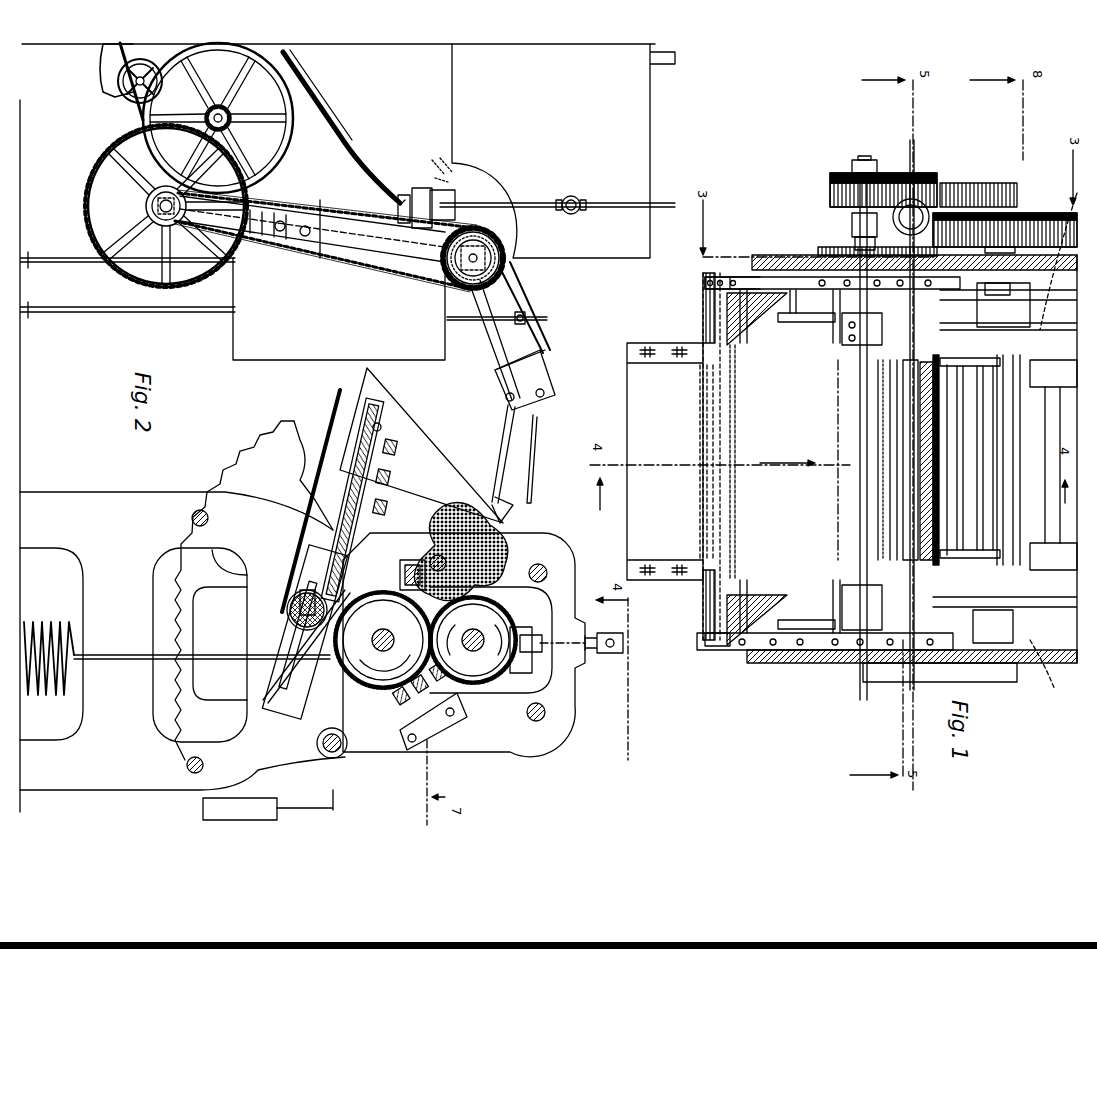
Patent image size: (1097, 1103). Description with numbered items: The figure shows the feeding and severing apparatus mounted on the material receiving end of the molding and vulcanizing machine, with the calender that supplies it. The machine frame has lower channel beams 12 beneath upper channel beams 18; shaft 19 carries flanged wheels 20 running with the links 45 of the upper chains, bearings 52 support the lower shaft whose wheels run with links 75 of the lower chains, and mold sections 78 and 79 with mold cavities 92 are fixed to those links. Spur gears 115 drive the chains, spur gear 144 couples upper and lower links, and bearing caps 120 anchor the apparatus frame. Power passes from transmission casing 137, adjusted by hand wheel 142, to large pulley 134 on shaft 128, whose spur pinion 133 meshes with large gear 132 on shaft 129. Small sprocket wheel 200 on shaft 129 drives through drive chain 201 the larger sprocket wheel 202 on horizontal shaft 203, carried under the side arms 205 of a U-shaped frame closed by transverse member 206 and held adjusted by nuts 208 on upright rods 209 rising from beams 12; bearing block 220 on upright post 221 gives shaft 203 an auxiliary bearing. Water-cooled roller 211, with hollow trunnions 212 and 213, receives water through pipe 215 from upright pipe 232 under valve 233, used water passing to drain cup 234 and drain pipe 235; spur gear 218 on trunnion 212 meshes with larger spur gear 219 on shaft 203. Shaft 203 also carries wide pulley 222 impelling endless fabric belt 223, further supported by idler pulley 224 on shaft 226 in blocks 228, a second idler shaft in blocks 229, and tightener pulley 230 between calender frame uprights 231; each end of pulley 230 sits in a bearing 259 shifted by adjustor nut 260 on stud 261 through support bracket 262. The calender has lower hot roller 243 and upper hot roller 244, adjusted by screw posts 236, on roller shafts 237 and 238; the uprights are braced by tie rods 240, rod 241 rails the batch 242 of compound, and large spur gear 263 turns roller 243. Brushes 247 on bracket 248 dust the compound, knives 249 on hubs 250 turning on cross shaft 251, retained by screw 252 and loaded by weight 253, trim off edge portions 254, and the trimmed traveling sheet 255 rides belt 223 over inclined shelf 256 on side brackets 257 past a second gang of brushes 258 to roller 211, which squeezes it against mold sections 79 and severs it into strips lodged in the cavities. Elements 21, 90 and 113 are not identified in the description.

In FIG. 1, the lower channel beams 12 is at (750, 300).
In FIG. 1, the upper channel beams 18 is at (1047, 465).
In FIG. 1, the shaft 19 is at (1022, 460).
In FIG. 1, the flanged wheels 20 is at (1027, 412).
In FIG. 1, the block 21 is at (1000, 325).
In FIG. 1, the links 45 is at (970, 458).
In FIG. 1, the bearings 52 is at (802, 312).
In FIG. 1, the links 75 is at (987, 458).
In FIG. 1, the mold section 78 is at (960, 458).
In FIG. 1, the mold section 79 is at (800, 347).
In FIG. 1, the bar 90 is at (947, 460).
In FIG. 1, the mold cavities 92 is at (947, 515).
In FIG. 2, the frame member 113 is at (678, 62).
In FIG. 1, the spur gears 115 is at (903, 400).
In FIG. 1, the bearing caps 120 is at (977, 310).
In FIG. 2, the shaft 128 is at (285, 110).
In FIG. 2, the horizontal shaft 129 is at (125, 178).
In FIG. 2, the large gear 132 is at (78, 205).
In FIG. 1, the large gear 132 is at (833, 180).
In FIG. 2, the spur pinion 133 is at (288, 140).
In FIG. 1, the spur pinion 133 is at (1000, 185).
In FIG. 2, the large pulley 134 is at (323, 112).
In FIG. 1, the large pulley 134 is at (1043, 215).
In FIG. 2, the casing 137 is at (120, 92).
In FIG. 2, the hand wheel 142 is at (103, 72).
In FIG. 1, the spur gear 144 is at (1053, 443).
In FIG. 2, the small sprocket wheel 200 is at (185, 218).
In FIG. 2, the drive chain 201 is at (338, 265).
In FIG. 2, the larger sprocket wheel 202 is at (458, 265).
In FIG. 1, the larger sprocket wheel 202 is at (863, 157).
In FIG. 2, the horizontal shaft 203 is at (503, 265).
In FIG. 1, the horizontal shaft 203 is at (862, 471).
In FIG. 2, the side arms 205 is at (470, 165).
In FIG. 1, the side arms 205 is at (752, 277).
In FIG. 1, the transverse member 206 is at (700, 330).
In FIG. 2, the nuts 208 is at (548, 378).
In FIG. 2, the upright rod 209 is at (462, 322).
In FIG. 1, the upright rod 209 is at (820, 280).
In FIG. 1, the water-cooled roller 211 is at (909, 452).
In FIG. 2, the hollow trunnion 212 is at (420, 190).
In FIG. 1, the hollow trunnion 212 is at (920, 460).
In FIG. 1, the hollow trunnion 213 is at (909, 525).
In FIG. 1, the water supply pipe 215 is at (925, 212).
In FIG. 2, the spur gear 218 is at (440, 178).
In FIG. 1, the spur gear 218 is at (975, 185).
In FIG. 2, the larger spur gear 219 is at (505, 262).
In FIG. 1, the larger spur gear 219 is at (825, 252).
In FIG. 2, the bearing block 220 is at (398, 272).
In FIG. 1, the bearing block 220 is at (837, 243).
In FIG. 2, the upright post 221 is at (355, 258).
In FIG. 1, the upright post 221 is at (892, 253).
In FIG. 1, the wide pulley 222 is at (878, 400).
In FIG. 2, the endless fabric belt 223 is at (520, 322).
In FIG. 1, the endless fabric belt 223 is at (700, 340).
In FIG. 1, the idler pulley 224 is at (700, 335).
In FIG. 1, the shaft 226 is at (703, 300).
In FIG. 2, the blocks 228 is at (550, 400).
In FIG. 1, the blocks 228 is at (713, 277).
In FIG. 2, the blocks 229 is at (505, 400).
In FIG. 2, the tightener pulley 230 is at (295, 588).
In FIG. 2, the frame uprights 231 is at (495, 753).
In FIG. 2, the upright water supply pipe 232 is at (540, 200).
In FIG. 1, the upright water supply pipe 232 is at (917, 195).
In FIG. 2, the shut-off valve 233 is at (575, 197).
In FIG. 2, the drain cup 234 is at (404, 195).
In FIG. 1, the drain cup 234 is at (906, 205).
In FIG. 2, the drain pipe 235 is at (362, 168).
In FIG. 2, the screw posts 236 is at (611, 656).
In FIG. 2, the roller shaft 237 is at (383, 640).
In FIG. 2, the roller shaft 238 is at (473, 640).
In FIG. 2, the tie rods 240 is at (192, 516).
In FIG. 2, the rod 241 is at (430, 565).
In FIG. 2, the batch 242 is at (468, 540).
In FIG. 2, the lower hot roller 243 is at (400, 580).
In FIG. 2, the upper hot roller 244 is at (490, 690).
In FIG. 2, the brushes 247 is at (372, 640).
In FIG. 2, the bracket 248 is at (420, 746).
In FIG. 2, the knives 249 is at (380, 705).
In FIG. 2, the hubs 250 is at (345, 750).
In FIG. 2, the cross shaft 251 is at (318, 745).
In FIG. 2, the screw 252 is at (320, 748).
In FIG. 2, the weight 253 is at (203, 810).
In FIG. 2, the edge portions 254 is at (126, 652).
In FIG. 2, the traveling sheet of compound 255 is at (575, 425).
In FIG. 1, the traveling sheet of compound 255 is at (628, 400).
In FIG. 2, the inclined shelf 256 is at (338, 470).
In FIG. 2, the side brackets 257 is at (437, 510).
In FIG. 2, the second gang of brushes 258 is at (398, 470).
In FIG. 2, the bearing 259 is at (292, 605).
In FIG. 2, the adjustor nut 260 is at (266, 703).
In FIG. 2, the adjustor stud 261 is at (290, 615).
In FIG. 2, the support bracket 262 is at (312, 665).
In FIG. 2, the large spur gear 263 is at (237, 440).